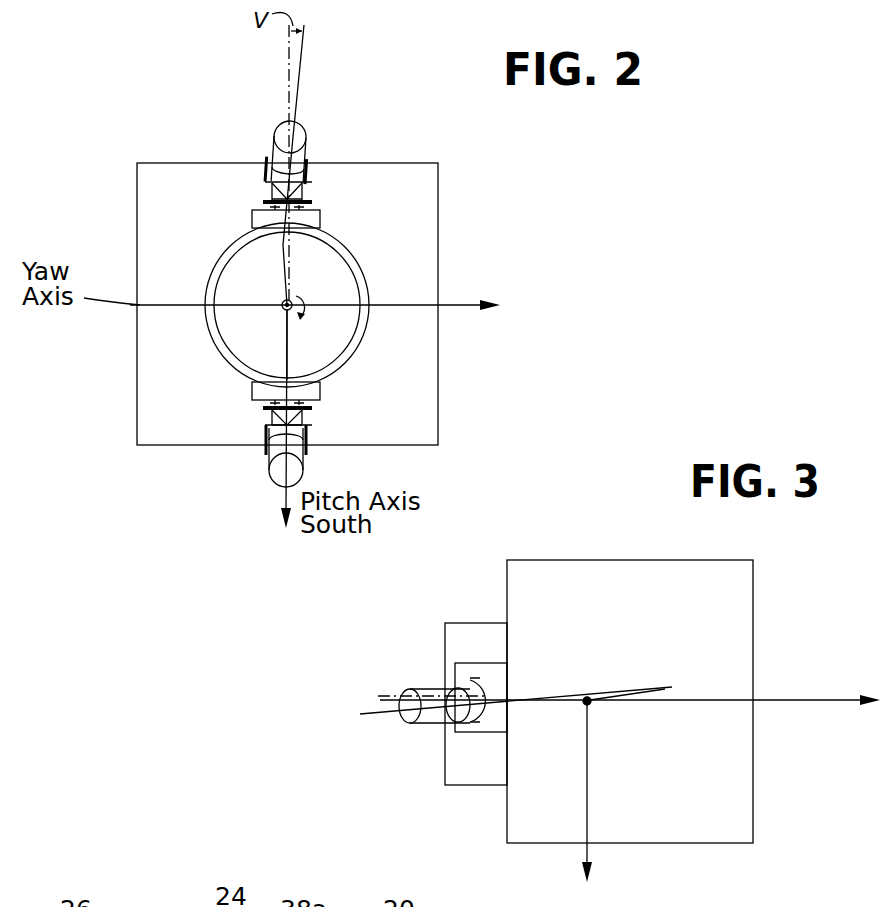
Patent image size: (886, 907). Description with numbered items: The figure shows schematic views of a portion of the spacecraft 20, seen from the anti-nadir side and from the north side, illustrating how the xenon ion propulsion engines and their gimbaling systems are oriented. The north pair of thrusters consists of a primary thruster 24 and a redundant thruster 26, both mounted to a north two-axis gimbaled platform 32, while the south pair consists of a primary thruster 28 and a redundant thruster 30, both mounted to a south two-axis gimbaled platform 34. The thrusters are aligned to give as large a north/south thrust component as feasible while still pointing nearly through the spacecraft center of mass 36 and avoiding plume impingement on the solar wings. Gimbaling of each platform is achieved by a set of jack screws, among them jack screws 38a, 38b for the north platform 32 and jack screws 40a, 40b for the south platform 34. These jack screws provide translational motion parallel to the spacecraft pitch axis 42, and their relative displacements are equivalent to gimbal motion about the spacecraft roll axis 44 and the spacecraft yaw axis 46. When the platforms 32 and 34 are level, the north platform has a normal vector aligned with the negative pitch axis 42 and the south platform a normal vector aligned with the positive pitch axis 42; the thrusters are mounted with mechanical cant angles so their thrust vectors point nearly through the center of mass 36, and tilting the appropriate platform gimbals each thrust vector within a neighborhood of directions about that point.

In FIG. 2, the spacecraft 20 is at (367, 168).
In FIG. 3, the spacecraft 20 is at (631, 566).
In FIG. 2, the primary north xenon ion propulsion thruster 24 is at (308, 147).
In FIG. 3, the primary north xenon ion propulsion thruster 24 is at (479, 717).
In FIG. 2, the redundant north xenon ion propulsion thruster 26 is at (346, 140).
In FIG. 3, the redundant north xenon ion propulsion thruster 26 is at (423, 727).
In FIG. 2, the primary south xenon ion propulsion thruster 28 is at (303, 458).
In FIG. 2, the redundant south xenon ion propulsion thruster 30 is at (354, 457).
In FIG. 2, the north two-axis gimbaled platform 32 is at (312, 183).
In FIG. 3, the north two-axis gimbaled platform 32 is at (470, 684).
In FIG. 2, the south two-axis gimbaled platform 34 is at (310, 423).
In FIG. 2, the spacecraft center of mass 36 is at (288, 314).
In FIG. 3, the spacecraft center of mass 36 is at (590, 700).
In FIG. 2, the jack screw 38a is at (267, 191).
In FIG. 2, the jack screw 38b is at (312, 194).
In FIG. 2, the jack screw 40a is at (268, 413).
In FIG. 2, the jack screw 40b is at (308, 413).
In FIG. 2, the spacecraft pitch axis 42 is at (286, 357).
In FIG. 2, the spacecraft roll axis 44 is at (456, 305).
In FIG. 3, the spacecraft roll axis 44 is at (588, 766).
In FIG. 2, the spacecraft yaw axis 46 is at (298, 297).
In FIG. 3, the spacecraft yaw axis 46 is at (777, 698).